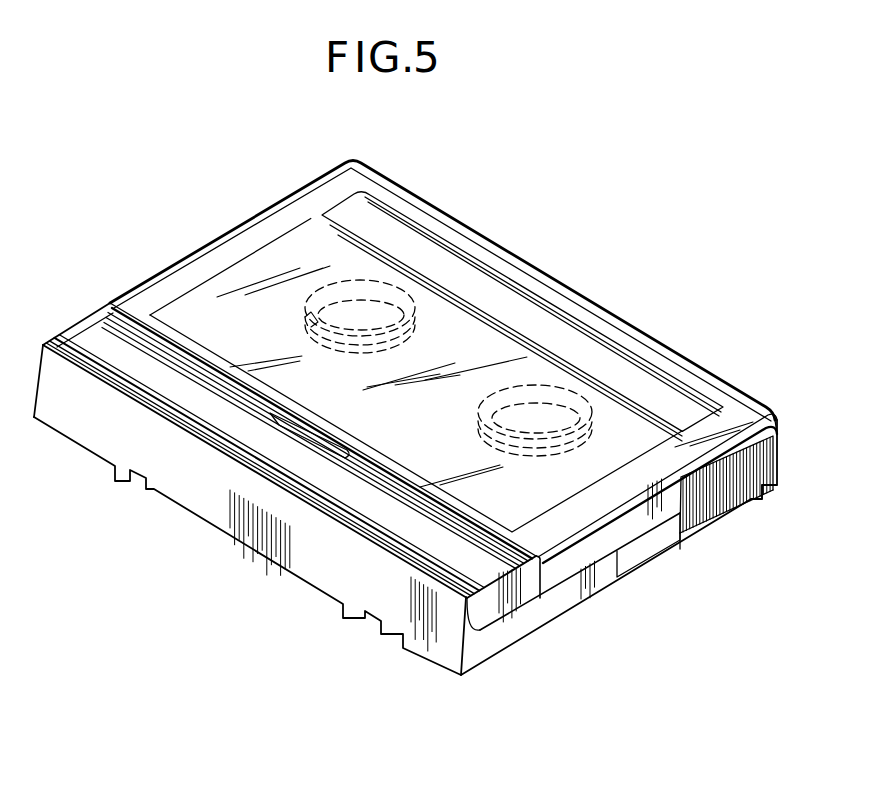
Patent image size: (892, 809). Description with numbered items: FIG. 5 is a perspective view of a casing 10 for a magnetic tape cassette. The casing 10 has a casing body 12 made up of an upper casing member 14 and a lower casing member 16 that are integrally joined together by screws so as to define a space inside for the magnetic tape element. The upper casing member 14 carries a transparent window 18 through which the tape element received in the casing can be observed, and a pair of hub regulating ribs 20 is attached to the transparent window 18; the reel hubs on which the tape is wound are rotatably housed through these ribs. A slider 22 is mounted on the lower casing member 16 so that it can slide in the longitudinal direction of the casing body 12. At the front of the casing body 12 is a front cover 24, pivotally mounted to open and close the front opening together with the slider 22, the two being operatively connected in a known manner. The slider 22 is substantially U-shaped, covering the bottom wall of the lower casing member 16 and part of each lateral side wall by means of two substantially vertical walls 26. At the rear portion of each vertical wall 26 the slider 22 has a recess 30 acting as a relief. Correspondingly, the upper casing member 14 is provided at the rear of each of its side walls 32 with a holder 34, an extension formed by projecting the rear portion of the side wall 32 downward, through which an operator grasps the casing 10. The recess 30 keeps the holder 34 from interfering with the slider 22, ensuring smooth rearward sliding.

The casing 10 is at (493, 672).
The casing body 12 is at (505, 231).
The upper casing member 14 is at (177, 273).
The lower casing member 16 is at (778, 485).
The transparent window 18 is at (633, 430).
The hub regulating ribs 20 is at (588, 410).
The slider 22 is at (681, 548).
The front cover 24 is at (437, 652).
The vertical walls 26 is at (558, 608).
The recess 30 is at (652, 541).
The side walls 32 is at (595, 552).
The holder 34 is at (725, 510).